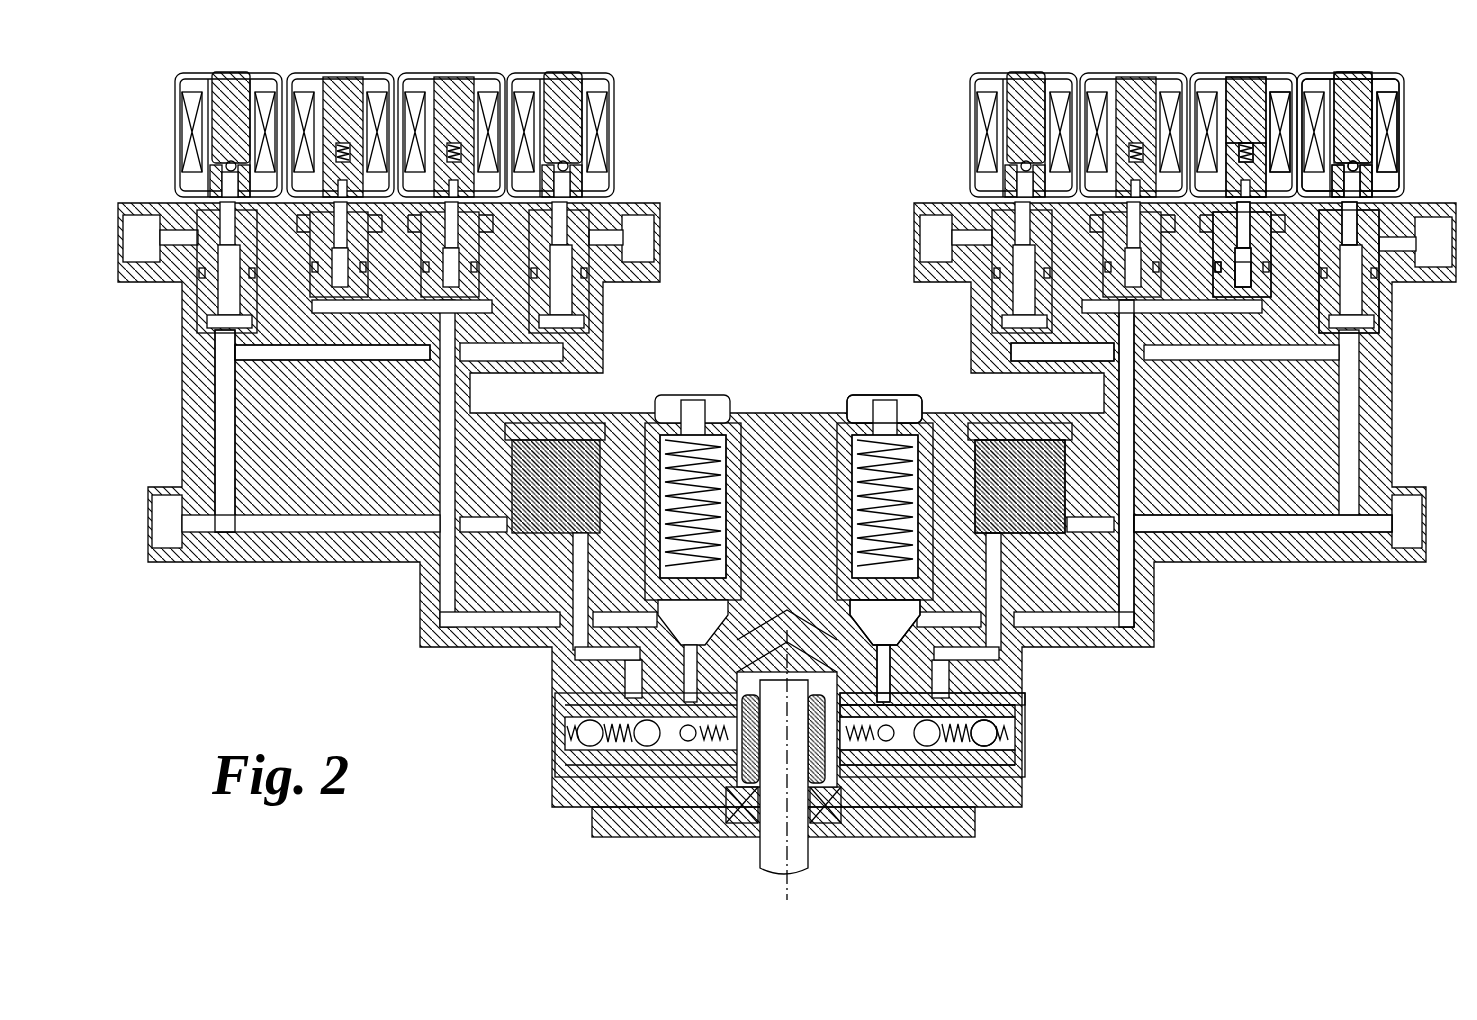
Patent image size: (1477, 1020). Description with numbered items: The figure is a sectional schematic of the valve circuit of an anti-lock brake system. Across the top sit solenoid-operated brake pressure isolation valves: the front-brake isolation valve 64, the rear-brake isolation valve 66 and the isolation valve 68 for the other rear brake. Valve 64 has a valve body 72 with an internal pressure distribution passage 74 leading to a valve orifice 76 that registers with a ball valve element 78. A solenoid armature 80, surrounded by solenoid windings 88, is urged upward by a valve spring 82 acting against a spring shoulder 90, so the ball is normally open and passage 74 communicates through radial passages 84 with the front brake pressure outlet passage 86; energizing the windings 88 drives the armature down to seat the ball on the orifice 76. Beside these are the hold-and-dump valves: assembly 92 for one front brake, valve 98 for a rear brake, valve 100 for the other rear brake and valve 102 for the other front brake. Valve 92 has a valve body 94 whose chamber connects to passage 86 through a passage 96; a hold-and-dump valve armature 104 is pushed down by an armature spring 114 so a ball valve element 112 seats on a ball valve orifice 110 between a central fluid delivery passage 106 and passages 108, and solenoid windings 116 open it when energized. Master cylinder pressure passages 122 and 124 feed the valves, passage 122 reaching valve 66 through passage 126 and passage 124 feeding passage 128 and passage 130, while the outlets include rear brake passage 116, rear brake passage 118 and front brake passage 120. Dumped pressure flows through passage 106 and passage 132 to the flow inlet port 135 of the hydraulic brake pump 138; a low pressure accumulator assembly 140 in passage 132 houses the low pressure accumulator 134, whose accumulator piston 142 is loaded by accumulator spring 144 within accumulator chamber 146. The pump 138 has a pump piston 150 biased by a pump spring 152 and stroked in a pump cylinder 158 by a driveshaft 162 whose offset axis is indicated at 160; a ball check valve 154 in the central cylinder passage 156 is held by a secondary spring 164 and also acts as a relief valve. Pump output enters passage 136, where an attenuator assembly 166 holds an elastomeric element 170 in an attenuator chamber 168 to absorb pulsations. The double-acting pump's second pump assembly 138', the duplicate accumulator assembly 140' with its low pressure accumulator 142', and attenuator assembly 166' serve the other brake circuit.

The brake pressure isolation valve 64 is at (1355, 74).
The brake pressure isolation valve 66 is at (1020, 74).
The brake pressure isolation valve 68 is at (572, 74).
The valve body 72 is at (1372, 242).
The internal pressure distribution passage 74 is at (1367, 302).
The valve orifice 76 is at (1372, 186).
The ball valve element 78 is at (1370, 166).
The solenoid armature 80 is at (1330, 100).
The valve spring 82 is at (1262, 160).
The radial passages 84 is at (1376, 200).
The front brake pressure outlet passage 86 is at (1438, 245).
The solenoid windings 88 is at (1371, 150).
The spring shoulder 90 is at (1366, 115).
The hold-and-dump valve assembly 92 is at (1210, 74).
The valve body 94 is at (1290, 222).
The passage 96 is at (1280, 216).
The hold-and-dump valve 98 is at (1115, 74).
The hold-and-dump valve 100 is at (452, 74).
The hold-and-dump valve 102 is at (345, 74).
The hold-and-dump valve armature 104 is at (1215, 247).
The central pressurized fluid delivery passage 106 is at (1248, 258).
The passages 108 is at (1270, 232).
The ball valve orifice 110 is at (1238, 252).
The ball valve element 112 is at (1232, 262).
The armature spring 114 is at (1150, 160).
The solenoid windings 116 is at (938, 206).
The rear brake passage 118 is at (636, 222).
The front brake passage 120 is at (138, 212).
The master cylinder pressure passage 122 is at (1400, 530).
The master cylinder pressure passage 124 is at (172, 527).
The passage 126 is at (1055, 348).
The passage 128 is at (233, 462).
The passage 130 is at (352, 352).
The pump return passage 132 is at (1135, 481).
The low pressure accumulator 134 is at (1000, 580).
The flow inlet port 135 is at (866, 656).
The passage 136 is at (1295, 532).
The hydraulic brake pump 138 is at (932, 790).
The pump assembly 138' is at (645, 790).
The low pressure accumulator assembly 140 is at (885, 519).
The relief valve 140' is at (705, 521).
The accumulator piston 142 is at (846, 506).
The low pressure accumulator 142' is at (734, 506).
The accumulator spring 144 is at (805, 452).
The accumulator chamber 146 is at (908, 522).
The pump piston 150 is at (930, 700).
The pump spring 152 is at (950, 765).
The ball check valve 154 is at (998, 736).
The central cylinder passage 156 is at (882, 755).
The pump cylinder 158 is at (890, 698).
The offset axis 160 is at (760, 760).
The shaft 162 is at (776, 836).
The secondary spring 164 is at (940, 722).
The attenuator assembly 166 is at (1006, 522).
The attenuator assembly 166' is at (550, 562).
The attenuator chamber 168 is at (1012, 440).
The elastomeric element 170 is at (250, 74).